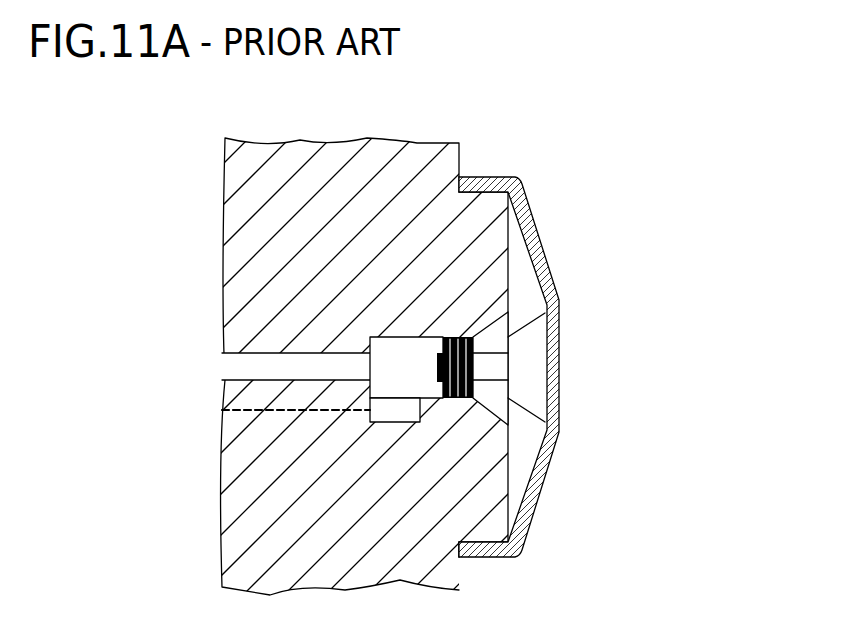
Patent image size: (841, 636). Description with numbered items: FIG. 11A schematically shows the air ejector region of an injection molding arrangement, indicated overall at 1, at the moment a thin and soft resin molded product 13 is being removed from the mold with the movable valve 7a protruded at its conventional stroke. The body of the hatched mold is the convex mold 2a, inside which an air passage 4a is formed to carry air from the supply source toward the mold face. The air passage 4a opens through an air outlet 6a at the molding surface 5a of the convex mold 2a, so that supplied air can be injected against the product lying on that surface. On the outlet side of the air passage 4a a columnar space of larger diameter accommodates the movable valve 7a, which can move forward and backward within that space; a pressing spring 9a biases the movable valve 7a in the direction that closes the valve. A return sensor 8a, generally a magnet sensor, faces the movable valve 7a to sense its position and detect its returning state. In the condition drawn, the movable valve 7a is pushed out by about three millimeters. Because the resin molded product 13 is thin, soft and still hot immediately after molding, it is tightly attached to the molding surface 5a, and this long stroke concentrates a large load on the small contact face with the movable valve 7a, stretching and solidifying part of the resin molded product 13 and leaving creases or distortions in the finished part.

The speaker device (prior art) 1 is at (420, 332).
The convex mold 2a is at (330, 157).
The thin and soft resin molded product 13 is at (523, 215).
The air passage 4a is at (300, 365).
The return sensor 8a is at (367, 428).
The molding surface 5a is at (507, 463).
The pressing spring 9a is at (473, 362).
The air outlet 6a is at (530, 323).
The movable valve 7a is at (533, 395).